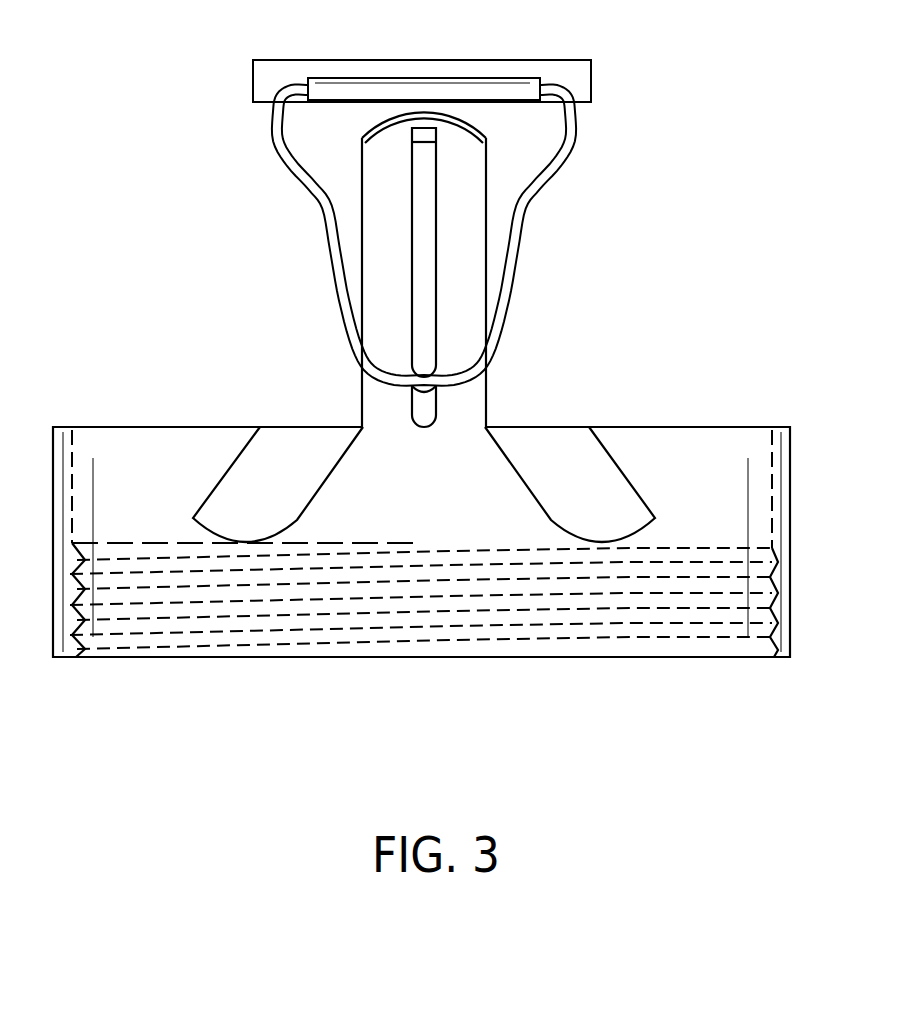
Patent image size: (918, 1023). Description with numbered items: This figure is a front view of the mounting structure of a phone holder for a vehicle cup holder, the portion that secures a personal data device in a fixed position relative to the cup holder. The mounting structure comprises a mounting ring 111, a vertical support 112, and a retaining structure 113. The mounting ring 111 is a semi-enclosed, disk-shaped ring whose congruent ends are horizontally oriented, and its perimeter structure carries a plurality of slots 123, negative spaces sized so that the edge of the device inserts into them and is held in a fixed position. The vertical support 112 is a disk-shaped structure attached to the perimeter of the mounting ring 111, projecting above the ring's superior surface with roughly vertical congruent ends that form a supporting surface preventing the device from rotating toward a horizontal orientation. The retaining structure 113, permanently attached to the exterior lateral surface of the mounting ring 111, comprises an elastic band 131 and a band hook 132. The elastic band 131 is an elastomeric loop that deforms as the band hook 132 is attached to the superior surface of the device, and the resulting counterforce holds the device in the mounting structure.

The mounting ring 111 is at (697, 452).
The vertical support 112 is at (463, 252).
The retaining structure 113 is at (737, 35).
The plurality of slots 123 is at (570, 502).
The elastic band 131 is at (568, 128).
The band hook 132 is at (587, 73).